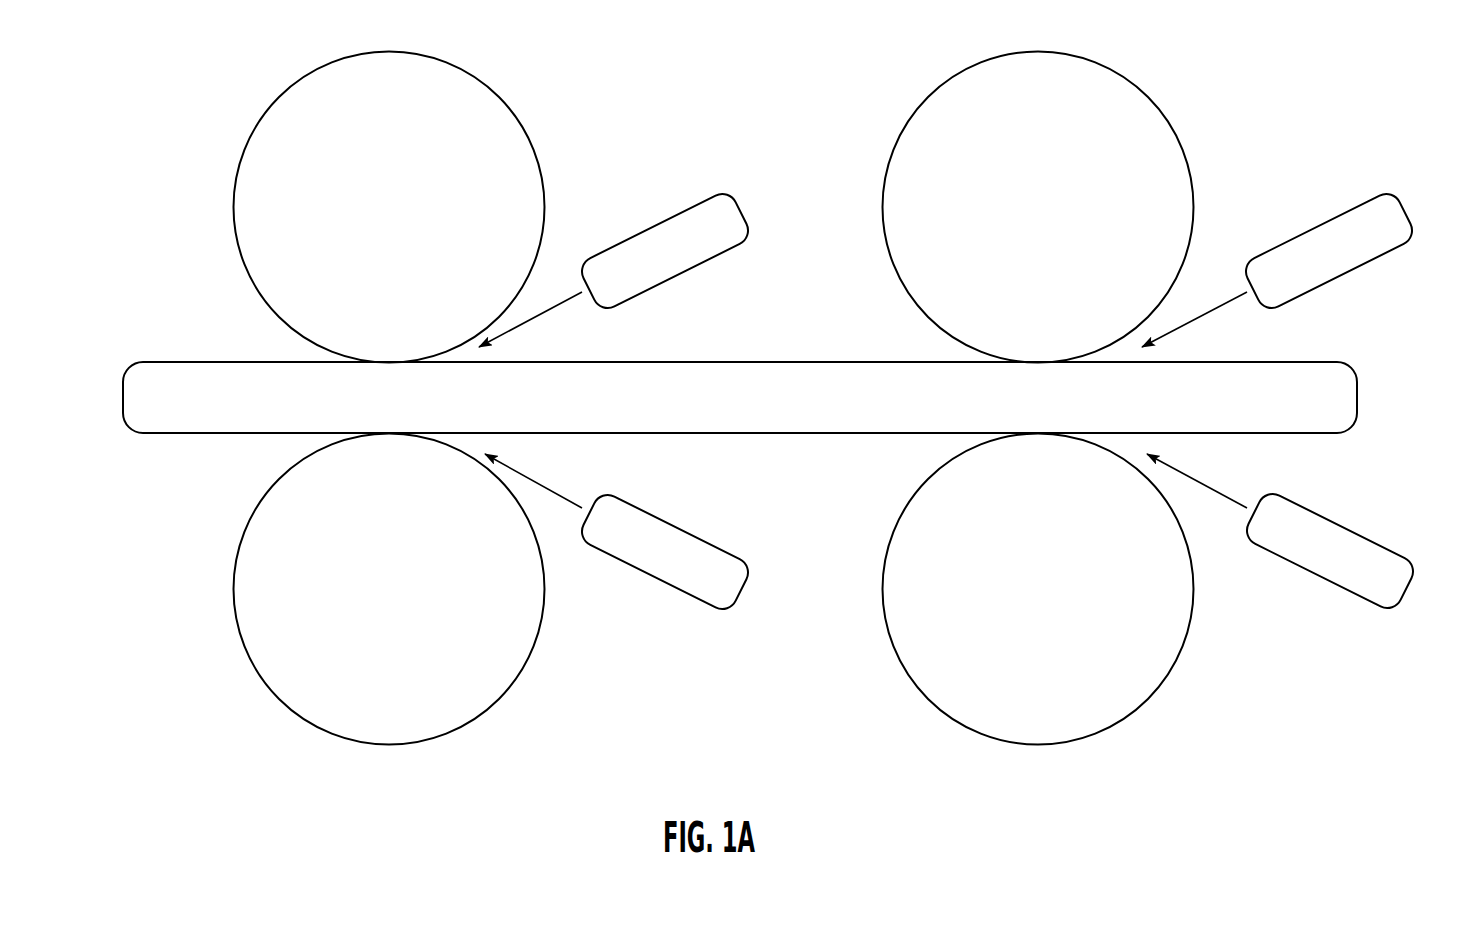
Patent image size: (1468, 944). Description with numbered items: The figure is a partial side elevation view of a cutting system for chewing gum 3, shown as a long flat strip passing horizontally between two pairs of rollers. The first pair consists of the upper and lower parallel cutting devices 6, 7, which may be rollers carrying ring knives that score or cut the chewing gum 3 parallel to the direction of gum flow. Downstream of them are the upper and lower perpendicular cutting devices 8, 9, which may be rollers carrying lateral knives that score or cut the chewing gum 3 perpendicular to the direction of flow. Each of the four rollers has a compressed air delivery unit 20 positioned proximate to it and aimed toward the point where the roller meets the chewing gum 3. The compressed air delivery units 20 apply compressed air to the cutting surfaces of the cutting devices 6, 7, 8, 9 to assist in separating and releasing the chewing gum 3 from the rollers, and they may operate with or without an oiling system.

The chewing gum 3 is at (160, 419).
The upper parallel cutting device 6 is at (509, 150).
The lower parallel cutting device 7 is at (291, 692).
The upper perpendicular cutting device 8 is at (1134, 148).
The lower perpendicular cutting device 9 is at (944, 695).
The compressed air delivery unit 20 is at (717, 217).